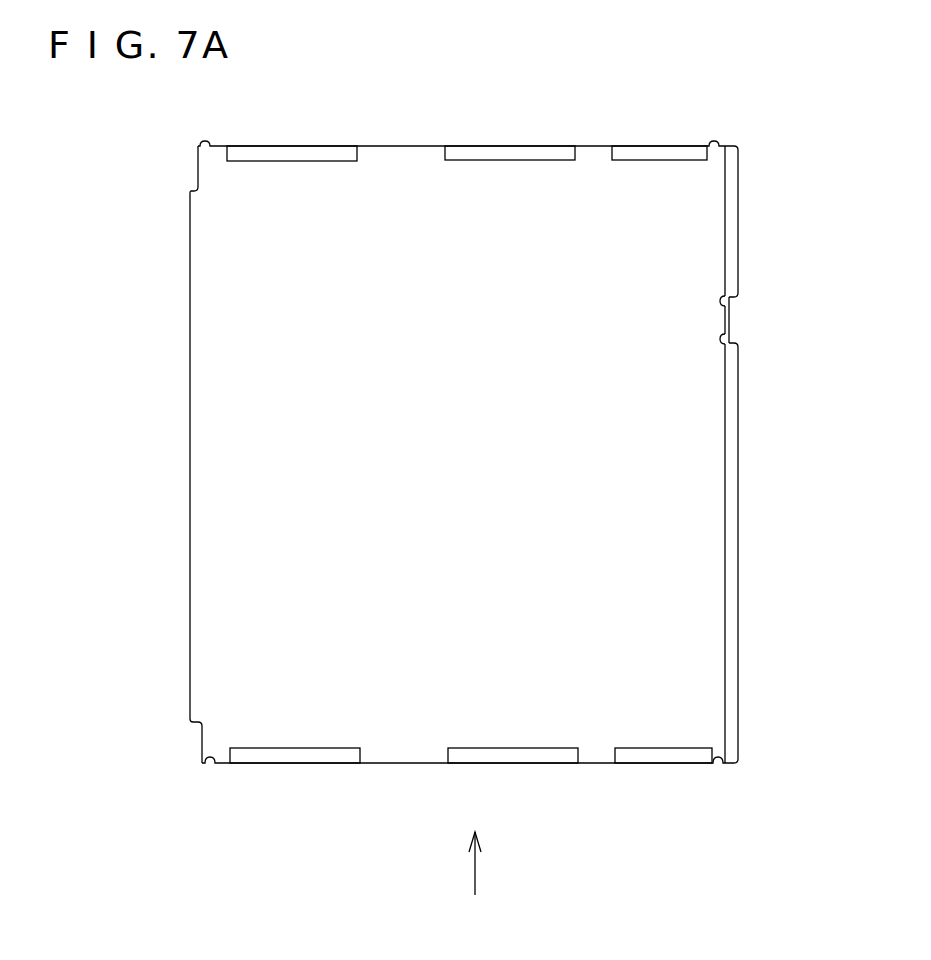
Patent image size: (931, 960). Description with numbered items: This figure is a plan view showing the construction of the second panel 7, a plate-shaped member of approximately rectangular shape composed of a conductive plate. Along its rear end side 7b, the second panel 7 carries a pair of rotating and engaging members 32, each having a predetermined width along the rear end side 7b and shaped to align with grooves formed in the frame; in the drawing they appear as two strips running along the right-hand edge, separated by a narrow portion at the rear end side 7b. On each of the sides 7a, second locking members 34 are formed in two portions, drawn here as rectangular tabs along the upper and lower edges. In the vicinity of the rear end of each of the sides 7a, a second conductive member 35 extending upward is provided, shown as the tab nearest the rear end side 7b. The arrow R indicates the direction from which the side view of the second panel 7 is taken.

The second panel 7 is at (513, 436).
The side 7a is at (388, 146).
The rear end side 7b is at (729, 313).
The rotating and engaging member 32 is at (738, 232).
The second locking member 34 is at (287, 150).
The second conductive member 35 is at (684, 149).
The arrow R is at (475, 872).